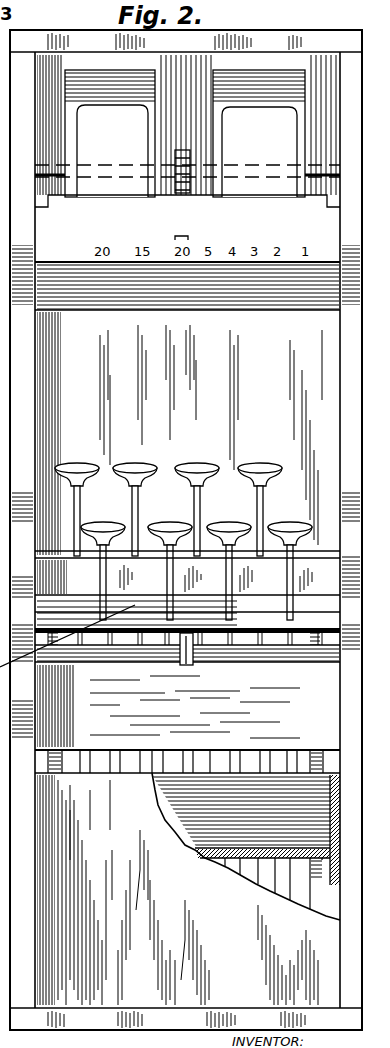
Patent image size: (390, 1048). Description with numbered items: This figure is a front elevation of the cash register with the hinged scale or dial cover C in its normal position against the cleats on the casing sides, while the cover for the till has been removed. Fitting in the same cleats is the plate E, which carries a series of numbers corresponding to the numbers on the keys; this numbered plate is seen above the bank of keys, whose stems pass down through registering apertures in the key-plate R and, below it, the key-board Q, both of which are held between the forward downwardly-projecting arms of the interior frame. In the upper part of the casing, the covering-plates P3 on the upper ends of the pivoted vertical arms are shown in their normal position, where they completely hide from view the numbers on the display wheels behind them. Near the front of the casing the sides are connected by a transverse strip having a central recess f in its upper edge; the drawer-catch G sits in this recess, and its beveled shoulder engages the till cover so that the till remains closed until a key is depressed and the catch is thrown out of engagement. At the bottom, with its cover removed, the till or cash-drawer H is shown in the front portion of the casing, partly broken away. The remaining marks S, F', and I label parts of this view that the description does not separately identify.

The covering-plate P3 is at (185, 132).
The plate E is at (187, 228).
The hinged scale or dial cover C is at (183, 508).
The key S is at (262, 466).
The key-board Q is at (187, 611).
The key-plate R is at (187, 619).
The drawer-catch G is at (178, 656).
The recess f is at (194, 660).
The frame plate F' is at (187, 673).
The till or cash-drawer H is at (328, 788).
The lower partition I is at (328, 868).